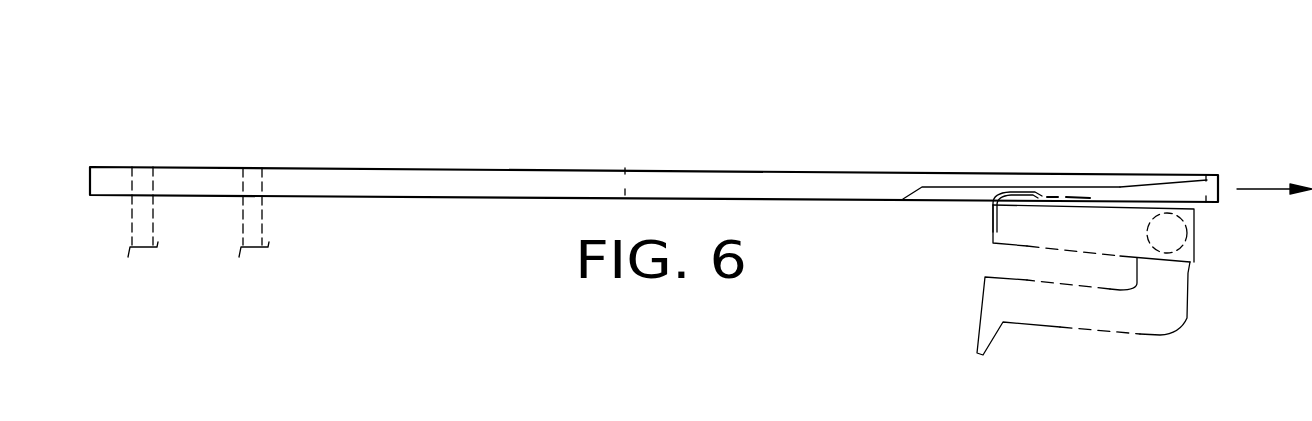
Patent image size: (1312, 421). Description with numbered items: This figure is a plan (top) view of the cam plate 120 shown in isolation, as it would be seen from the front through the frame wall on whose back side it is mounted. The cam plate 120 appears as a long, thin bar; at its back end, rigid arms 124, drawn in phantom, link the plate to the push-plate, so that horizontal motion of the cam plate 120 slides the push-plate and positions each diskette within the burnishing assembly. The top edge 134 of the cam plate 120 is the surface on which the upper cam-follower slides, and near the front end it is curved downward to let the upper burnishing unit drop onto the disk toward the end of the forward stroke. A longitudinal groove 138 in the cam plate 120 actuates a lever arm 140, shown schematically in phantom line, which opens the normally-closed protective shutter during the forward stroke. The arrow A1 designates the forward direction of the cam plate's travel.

The cam plate 120 is at (1030, 118).
The rigid arms 124 is at (150, 221).
The top edge 134 is at (888, 186).
The longitudinal groove 138 is at (1115, 195).
The lever arm 140 is at (1196, 212).
The arrow A1 is at (1258, 189).